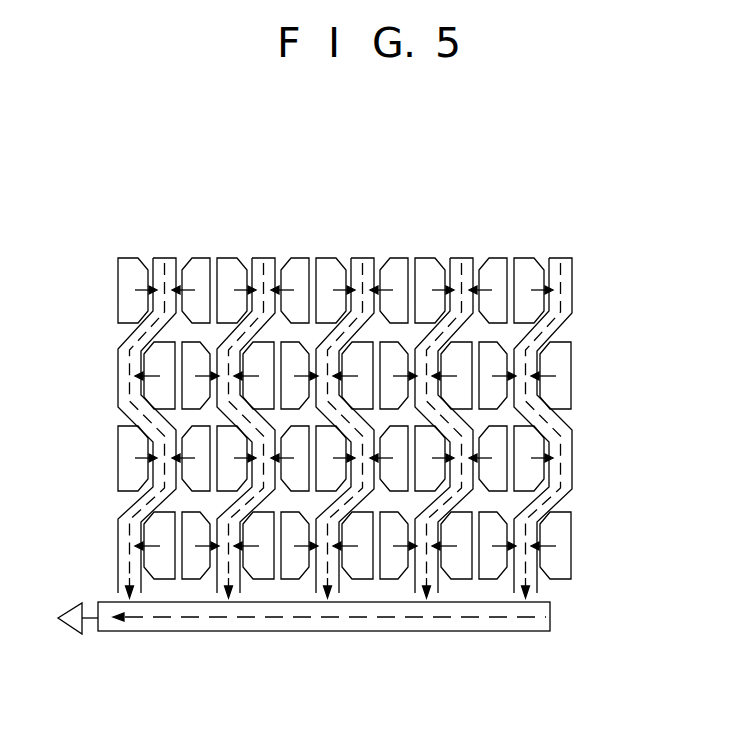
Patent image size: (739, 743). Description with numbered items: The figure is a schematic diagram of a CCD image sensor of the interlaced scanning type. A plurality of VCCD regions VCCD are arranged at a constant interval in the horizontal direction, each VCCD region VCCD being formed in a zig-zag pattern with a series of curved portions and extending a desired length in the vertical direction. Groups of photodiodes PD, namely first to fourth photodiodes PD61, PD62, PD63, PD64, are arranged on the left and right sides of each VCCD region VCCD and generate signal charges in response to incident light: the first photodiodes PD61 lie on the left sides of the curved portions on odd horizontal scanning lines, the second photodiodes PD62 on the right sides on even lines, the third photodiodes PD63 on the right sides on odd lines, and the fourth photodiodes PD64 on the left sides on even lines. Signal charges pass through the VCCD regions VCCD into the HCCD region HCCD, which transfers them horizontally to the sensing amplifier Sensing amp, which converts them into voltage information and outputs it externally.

The photodiodes PD is at (471, 144).
The first photodiode PD61 is at (228, 274).
The second photodiode PD62 is at (265, 357).
The third photodiode PD63 is at (300, 268).
The fourth photodiode PD64 is at (197, 357).
The VCCD region VCCD is at (457, 268).
The HCCD region HCCD is at (550, 608).
The sensing amplifier Sensing amp is at (68, 633).